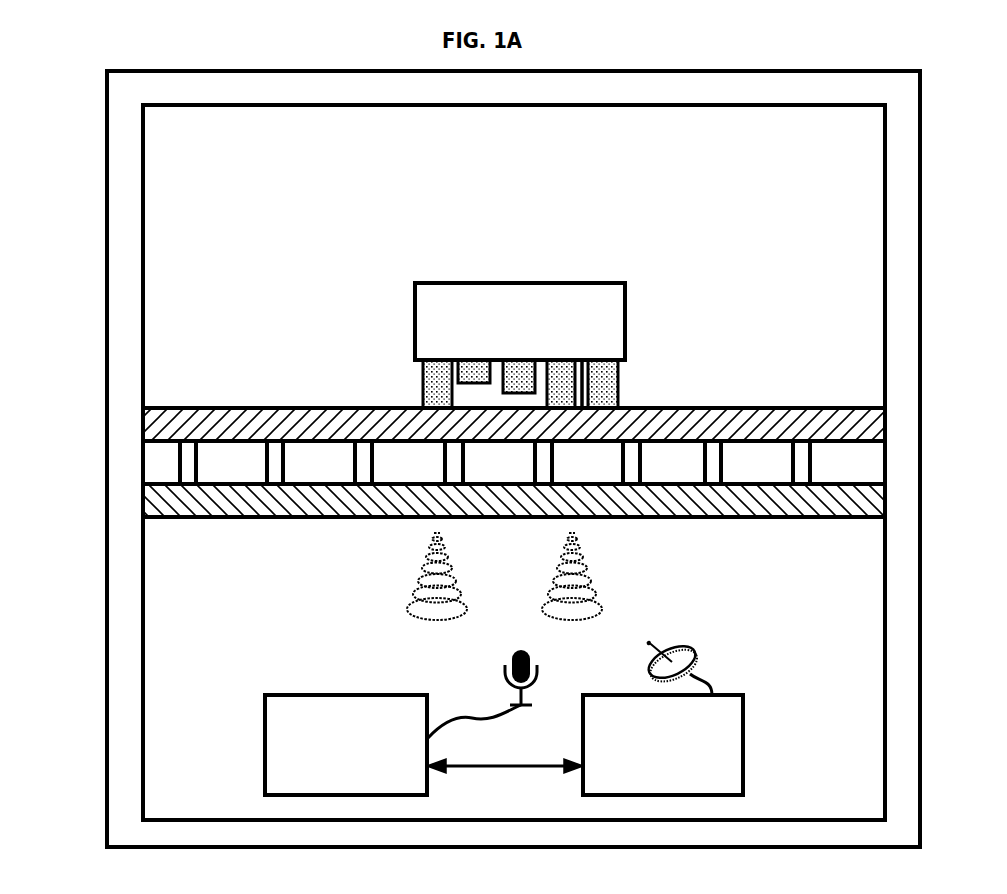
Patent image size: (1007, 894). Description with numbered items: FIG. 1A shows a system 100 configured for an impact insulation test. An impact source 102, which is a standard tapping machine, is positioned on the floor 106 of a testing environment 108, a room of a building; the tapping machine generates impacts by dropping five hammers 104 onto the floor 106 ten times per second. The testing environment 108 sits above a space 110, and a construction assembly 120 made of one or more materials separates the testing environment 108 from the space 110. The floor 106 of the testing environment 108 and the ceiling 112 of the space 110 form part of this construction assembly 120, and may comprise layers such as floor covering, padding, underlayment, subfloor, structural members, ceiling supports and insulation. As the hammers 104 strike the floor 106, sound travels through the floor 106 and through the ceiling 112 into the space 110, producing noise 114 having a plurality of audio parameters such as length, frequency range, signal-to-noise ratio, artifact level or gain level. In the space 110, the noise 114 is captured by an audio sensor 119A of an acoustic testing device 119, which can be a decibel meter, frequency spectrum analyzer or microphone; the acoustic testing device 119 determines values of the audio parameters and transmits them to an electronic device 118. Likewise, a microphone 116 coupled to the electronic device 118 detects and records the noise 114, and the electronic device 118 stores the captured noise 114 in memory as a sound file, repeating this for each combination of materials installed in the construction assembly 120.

The system 100 is at (777, 47).
The impact source 102 is at (585, 283).
The hammers 104 is at (619, 385).
The floor 106 is at (712, 408).
The testing environment 108 is at (867, 150).
The space 110 is at (867, 563).
The ceiling 112 is at (787, 517).
The noise 114 is at (410, 579).
The microphone 116 is at (538, 663).
The electronic device 118 is at (428, 735).
The acoustic testing device 119 is at (744, 772).
The audio sensor 119A is at (700, 648).
The construction assembly 120 is at (136, 410).